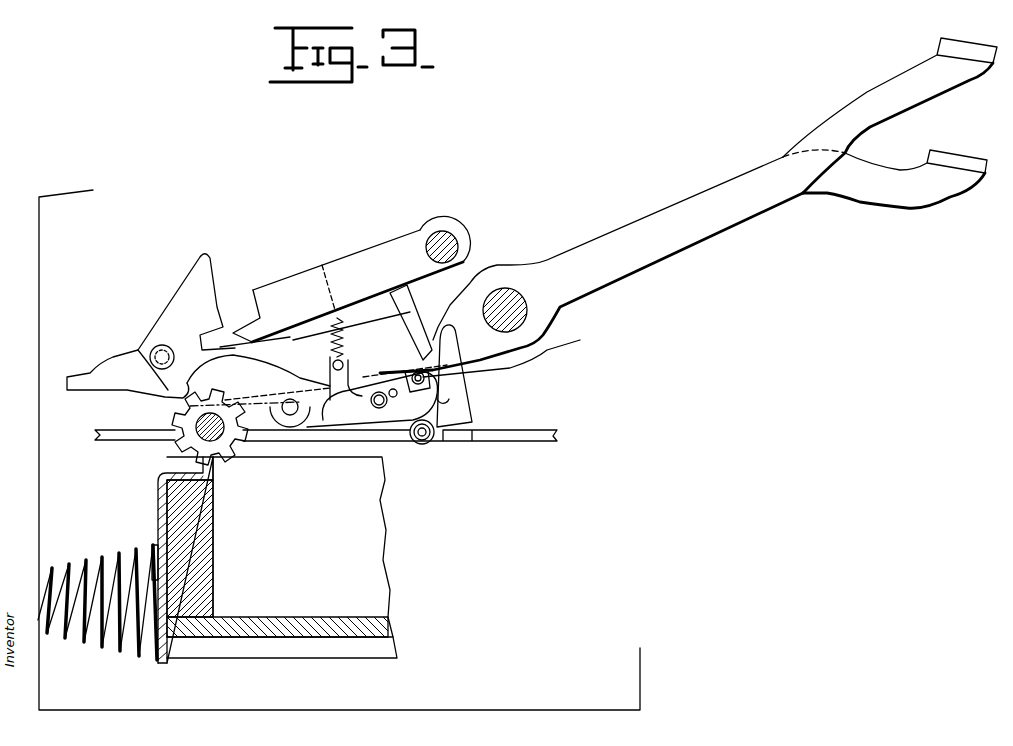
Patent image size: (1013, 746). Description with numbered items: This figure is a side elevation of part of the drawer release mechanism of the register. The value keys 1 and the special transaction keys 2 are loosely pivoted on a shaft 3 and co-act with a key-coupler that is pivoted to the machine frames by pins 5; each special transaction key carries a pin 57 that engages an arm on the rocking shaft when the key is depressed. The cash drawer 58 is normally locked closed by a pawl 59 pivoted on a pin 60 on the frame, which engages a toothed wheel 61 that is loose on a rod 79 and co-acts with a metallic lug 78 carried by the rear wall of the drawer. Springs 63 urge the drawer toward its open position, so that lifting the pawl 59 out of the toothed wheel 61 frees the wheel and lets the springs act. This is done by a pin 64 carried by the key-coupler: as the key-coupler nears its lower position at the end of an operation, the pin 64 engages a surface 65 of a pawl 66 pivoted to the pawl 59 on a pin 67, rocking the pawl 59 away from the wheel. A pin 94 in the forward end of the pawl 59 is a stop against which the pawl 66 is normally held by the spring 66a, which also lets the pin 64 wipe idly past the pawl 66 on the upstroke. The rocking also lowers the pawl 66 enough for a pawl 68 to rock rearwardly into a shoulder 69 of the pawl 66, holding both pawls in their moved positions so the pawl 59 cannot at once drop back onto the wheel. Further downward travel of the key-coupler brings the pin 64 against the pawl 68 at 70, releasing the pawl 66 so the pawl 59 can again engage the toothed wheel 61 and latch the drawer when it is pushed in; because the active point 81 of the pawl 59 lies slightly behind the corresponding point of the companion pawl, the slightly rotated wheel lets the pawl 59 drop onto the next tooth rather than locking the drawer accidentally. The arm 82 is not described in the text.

The value keys 1 is at (905, 200).
The special transaction keys 2 is at (863, 98).
The shaft 3 is at (510, 313).
The pins 5 is at (450, 237).
The pin 57 is at (157, 347).
The cash drawer 58 is at (178, 500).
The pawl 59 is at (220, 360).
The pin 60 is at (293, 410).
The toothed wheel 61 is at (240, 443).
The springs 63 is at (72, 640).
The pin 64 is at (413, 280).
The surface 65 is at (385, 355).
The pawl 66 is at (373, 343).
The spring 66a is at (320, 328).
The pin 67 is at (380, 407).
The pawl 68 is at (460, 397).
The shoulder 69 is at (420, 380).
The engagement point 70 is at (437, 327).
The metallic lug 78 is at (170, 470).
The rod 79 is at (183, 428).
The point 81 is at (197, 368).
The arm 82 is at (128, 370).
The pin 94 is at (555, 351).